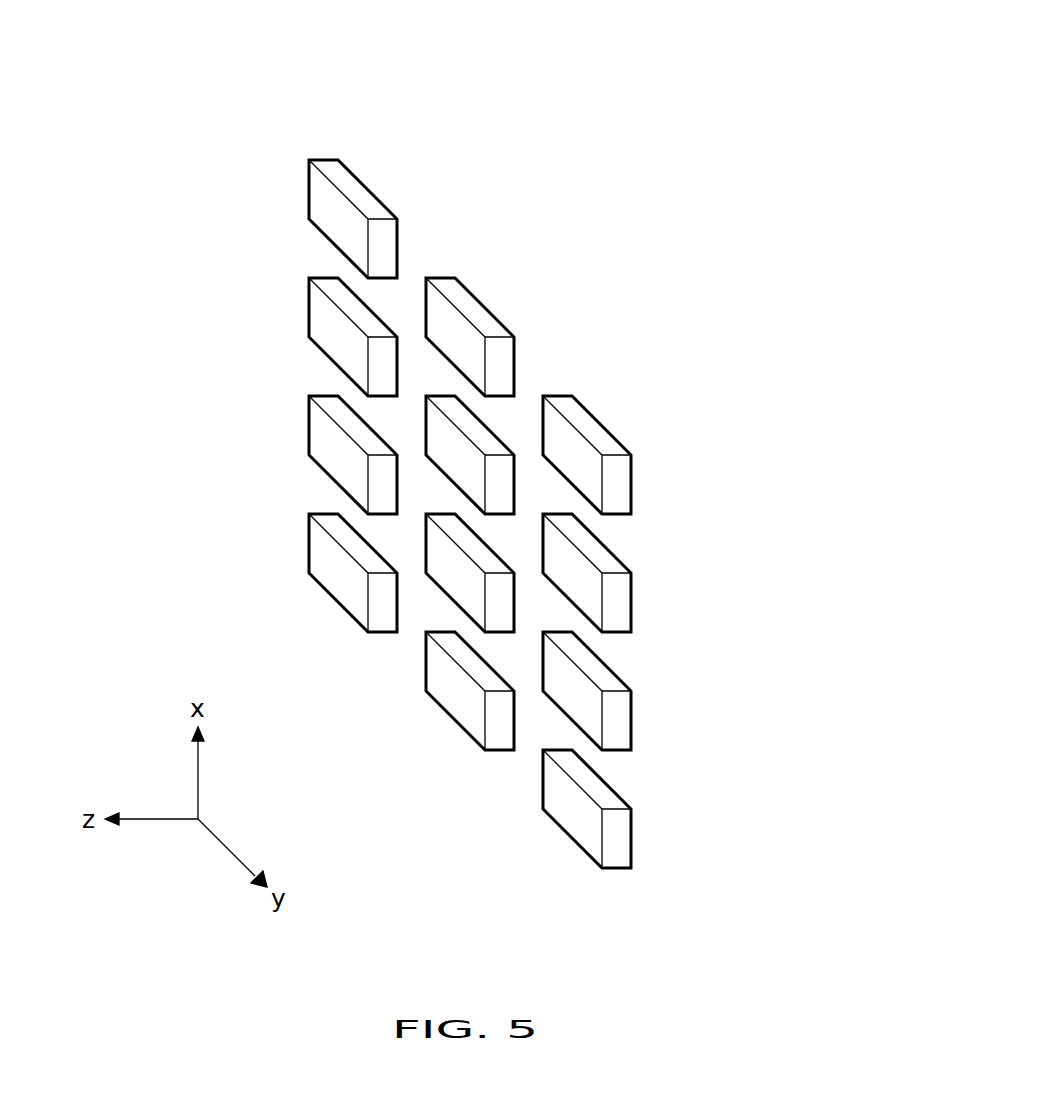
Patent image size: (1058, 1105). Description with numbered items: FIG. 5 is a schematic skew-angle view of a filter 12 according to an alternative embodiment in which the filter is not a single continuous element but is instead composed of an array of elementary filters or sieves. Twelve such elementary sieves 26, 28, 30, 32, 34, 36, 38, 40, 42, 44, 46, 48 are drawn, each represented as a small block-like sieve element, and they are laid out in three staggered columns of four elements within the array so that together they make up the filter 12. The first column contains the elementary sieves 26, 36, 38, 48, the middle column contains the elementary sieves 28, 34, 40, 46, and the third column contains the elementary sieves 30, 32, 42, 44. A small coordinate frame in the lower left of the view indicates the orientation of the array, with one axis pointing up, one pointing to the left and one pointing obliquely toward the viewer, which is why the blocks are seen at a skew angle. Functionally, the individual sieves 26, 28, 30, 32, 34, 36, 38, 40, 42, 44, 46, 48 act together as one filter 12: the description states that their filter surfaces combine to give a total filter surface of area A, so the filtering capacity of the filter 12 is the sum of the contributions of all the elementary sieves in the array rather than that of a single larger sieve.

The filter 12 is at (658, 102).
The elementary sieve 26 is at (309, 192).
The elementary sieve 28 is at (474, 308).
The elementary sieve 30 is at (590, 423).
The elementary sieve 32 is at (632, 603).
The elementary sieve 34 is at (473, 470).
The elementary sieve 36 is at (309, 310).
The elementary sieve 38 is at (309, 428).
The elementary sieve 40 is at (473, 588).
The elementary sieve 42 is at (632, 721).
The elementary sieve 44 is at (632, 839).
The elementary sieve 46 is at (457, 724).
The elementary sieve 48 is at (309, 546).